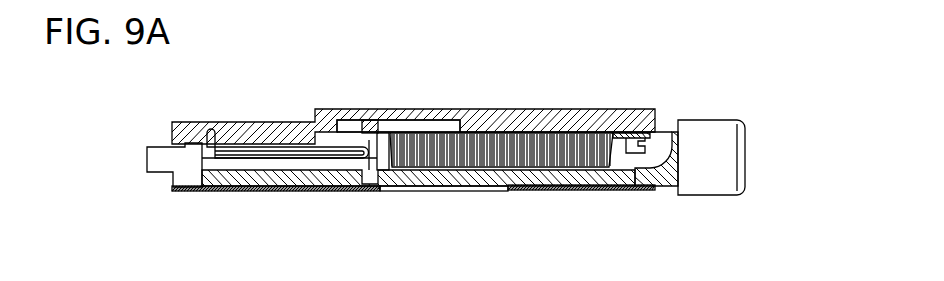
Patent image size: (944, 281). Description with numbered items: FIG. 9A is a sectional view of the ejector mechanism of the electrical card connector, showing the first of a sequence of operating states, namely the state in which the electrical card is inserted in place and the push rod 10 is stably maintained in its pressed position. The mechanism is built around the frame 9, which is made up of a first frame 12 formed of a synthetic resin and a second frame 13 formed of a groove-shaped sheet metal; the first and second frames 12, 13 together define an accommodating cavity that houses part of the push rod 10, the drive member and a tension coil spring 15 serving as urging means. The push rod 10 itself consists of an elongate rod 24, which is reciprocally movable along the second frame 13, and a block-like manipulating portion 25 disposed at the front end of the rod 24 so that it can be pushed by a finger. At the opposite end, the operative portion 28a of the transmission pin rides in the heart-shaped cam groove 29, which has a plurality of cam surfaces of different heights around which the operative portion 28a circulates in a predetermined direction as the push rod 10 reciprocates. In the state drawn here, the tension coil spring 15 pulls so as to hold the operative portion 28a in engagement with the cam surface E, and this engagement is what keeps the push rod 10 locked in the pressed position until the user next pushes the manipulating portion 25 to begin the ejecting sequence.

The frame 9 is at (606, 212).
The push rod 10 is at (481, 157).
The first frame 12 is at (498, 108).
The second frame 13 is at (553, 190).
The tension coil spring 15 is at (553, 140).
The rod 24 is at (667, 177).
The manipulating portion 25 is at (732, 150).
The operative portion 28a is at (213, 128).
The heart-shaped cam groove 29 is at (172, 152).
The cam surface E is at (172, 152).